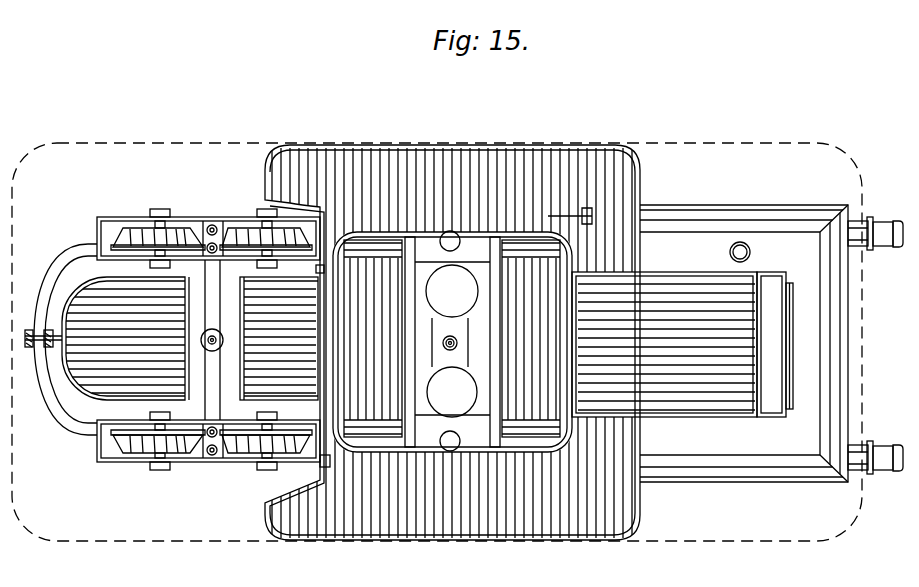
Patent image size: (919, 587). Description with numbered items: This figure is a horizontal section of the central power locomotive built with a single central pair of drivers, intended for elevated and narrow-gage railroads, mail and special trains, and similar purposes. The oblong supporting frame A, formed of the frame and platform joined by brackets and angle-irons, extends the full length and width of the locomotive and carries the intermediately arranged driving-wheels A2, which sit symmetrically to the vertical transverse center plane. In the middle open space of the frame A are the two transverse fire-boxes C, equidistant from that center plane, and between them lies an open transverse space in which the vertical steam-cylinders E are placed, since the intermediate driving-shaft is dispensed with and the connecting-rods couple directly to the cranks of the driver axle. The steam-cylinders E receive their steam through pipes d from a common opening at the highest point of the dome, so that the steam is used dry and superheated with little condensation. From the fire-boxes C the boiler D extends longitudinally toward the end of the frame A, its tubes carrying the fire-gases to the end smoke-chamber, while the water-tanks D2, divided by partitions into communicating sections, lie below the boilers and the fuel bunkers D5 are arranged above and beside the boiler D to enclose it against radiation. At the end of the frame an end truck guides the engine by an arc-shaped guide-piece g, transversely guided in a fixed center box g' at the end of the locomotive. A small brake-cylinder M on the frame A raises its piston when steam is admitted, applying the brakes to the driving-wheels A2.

The frame A is at (472, 195).
The driving-wheels A2 is at (212, 215).
The fire-boxes C is at (452, 338).
The boilers D is at (690, 352).
The water-tanks D2 is at (128, 352).
The bunkers D5 is at (708, 263).
The steam-cylinders E is at (466, 300).
The brake-cylinder M is at (464, 248).
The pipes d is at (457, 343).
The arc-shaped guide-piece g is at (60, 339).
The fixed center box g' is at (32, 340).